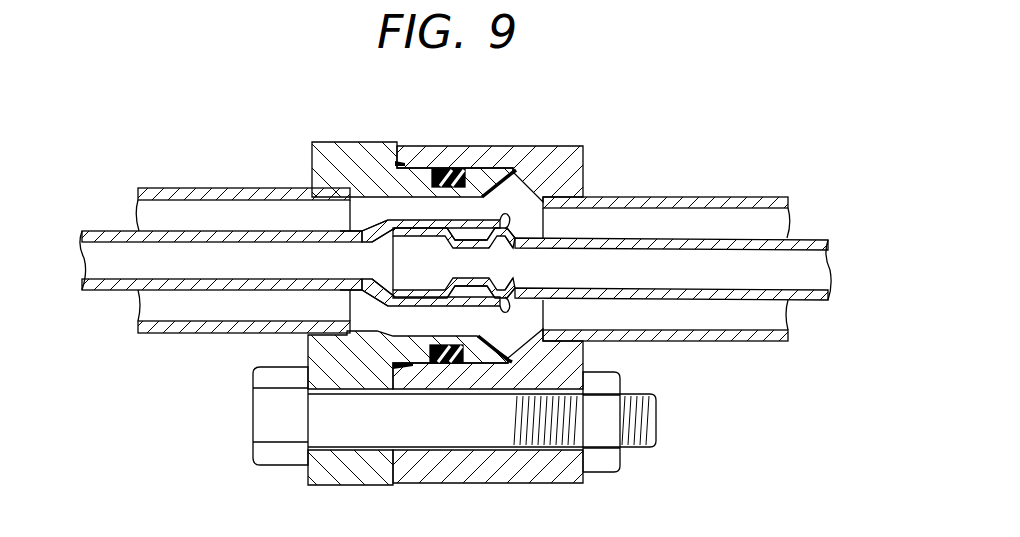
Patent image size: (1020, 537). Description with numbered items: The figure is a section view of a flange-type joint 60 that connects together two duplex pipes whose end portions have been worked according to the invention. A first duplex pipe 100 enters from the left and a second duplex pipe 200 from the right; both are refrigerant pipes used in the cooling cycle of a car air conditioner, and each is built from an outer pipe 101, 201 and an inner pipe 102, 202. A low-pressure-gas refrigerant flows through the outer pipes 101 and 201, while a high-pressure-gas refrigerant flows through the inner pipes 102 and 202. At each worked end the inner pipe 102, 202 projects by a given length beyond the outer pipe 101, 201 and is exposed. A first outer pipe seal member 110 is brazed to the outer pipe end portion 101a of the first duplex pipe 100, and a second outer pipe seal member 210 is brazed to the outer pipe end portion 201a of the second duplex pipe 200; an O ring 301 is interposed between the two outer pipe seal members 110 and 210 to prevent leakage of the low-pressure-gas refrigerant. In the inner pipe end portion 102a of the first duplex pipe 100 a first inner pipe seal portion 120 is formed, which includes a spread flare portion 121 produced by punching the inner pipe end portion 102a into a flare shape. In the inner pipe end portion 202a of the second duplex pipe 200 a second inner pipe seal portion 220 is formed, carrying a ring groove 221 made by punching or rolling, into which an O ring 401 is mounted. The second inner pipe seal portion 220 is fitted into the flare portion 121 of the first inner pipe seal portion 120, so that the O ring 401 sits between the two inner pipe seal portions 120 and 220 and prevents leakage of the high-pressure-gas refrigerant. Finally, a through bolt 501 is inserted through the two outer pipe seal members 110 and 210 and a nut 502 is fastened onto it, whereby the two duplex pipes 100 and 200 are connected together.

The joint 60 is at (262, 60).
The first duplex pipe 100 is at (193, 127).
The outer pipe 101 is at (172, 186).
The inner pipe 102 is at (91, 229).
The outer pipe end portion 101a is at (312, 203).
The inner pipe end portion 102a is at (352, 248).
The first outer pipe seal member 110 is at (356, 132).
The first inner pipe seal portion 120 is at (409, 211).
The flare portion 121 is at (383, 241).
The second duplex pipe 200 is at (858, 138).
The outer pipe 201 is at (776, 196).
The inner pipe 202 is at (814, 239).
The outer pipe end portion 201a is at (545, 197).
The inner pipe end portion 202a is at (527, 247).
The second outer pipe seal member 210 is at (573, 135).
The second inner pipe seal portion 220 is at (408, 240).
The ring groove 221 is at (470, 292).
The O ring 301 is at (450, 167).
The O ring 401 is at (487, 184).
The through bolt 501 is at (636, 449).
The nut 502 is at (600, 469).